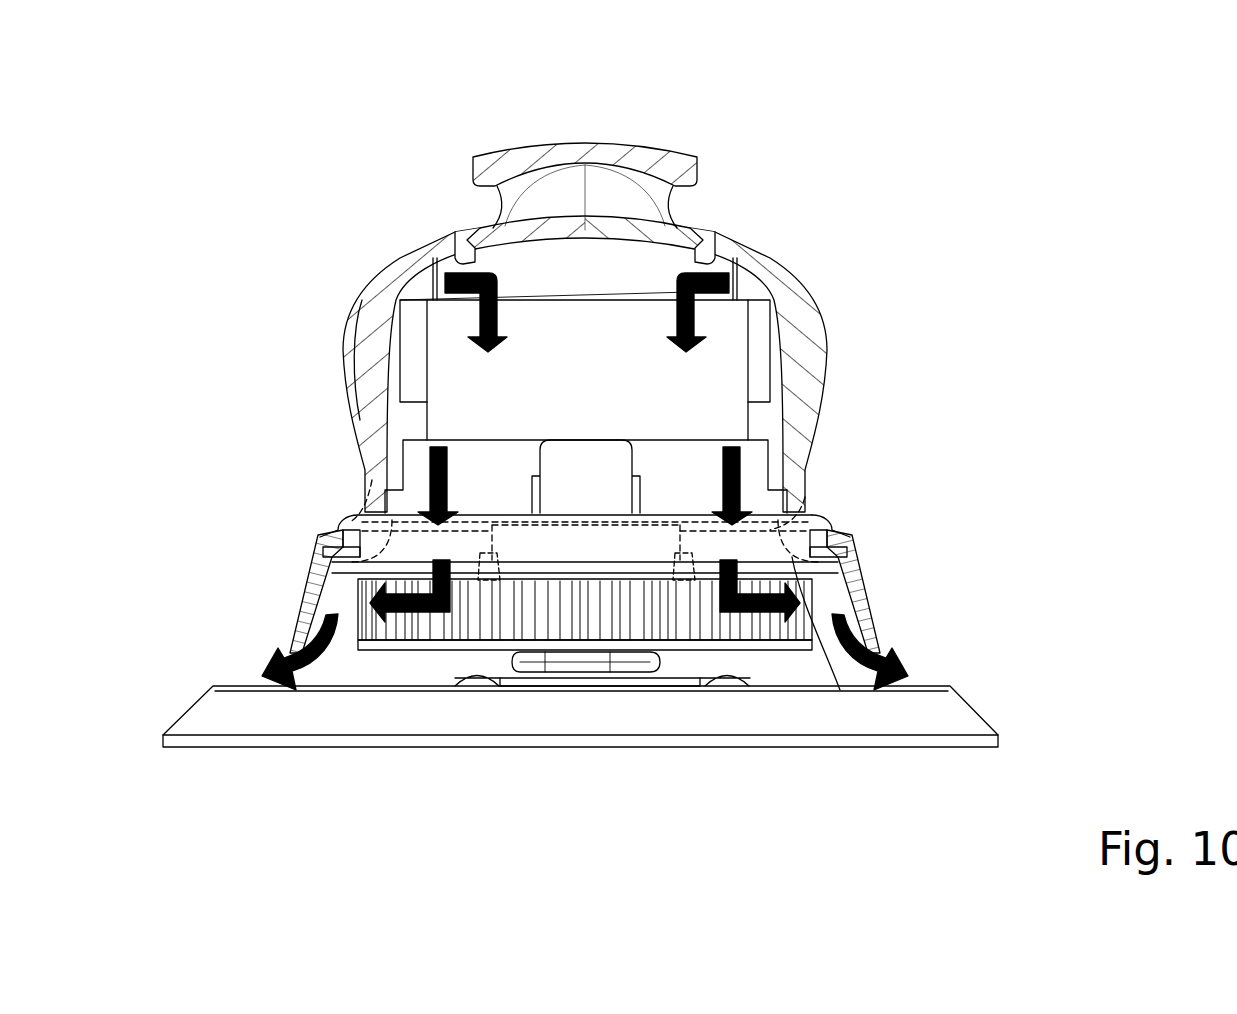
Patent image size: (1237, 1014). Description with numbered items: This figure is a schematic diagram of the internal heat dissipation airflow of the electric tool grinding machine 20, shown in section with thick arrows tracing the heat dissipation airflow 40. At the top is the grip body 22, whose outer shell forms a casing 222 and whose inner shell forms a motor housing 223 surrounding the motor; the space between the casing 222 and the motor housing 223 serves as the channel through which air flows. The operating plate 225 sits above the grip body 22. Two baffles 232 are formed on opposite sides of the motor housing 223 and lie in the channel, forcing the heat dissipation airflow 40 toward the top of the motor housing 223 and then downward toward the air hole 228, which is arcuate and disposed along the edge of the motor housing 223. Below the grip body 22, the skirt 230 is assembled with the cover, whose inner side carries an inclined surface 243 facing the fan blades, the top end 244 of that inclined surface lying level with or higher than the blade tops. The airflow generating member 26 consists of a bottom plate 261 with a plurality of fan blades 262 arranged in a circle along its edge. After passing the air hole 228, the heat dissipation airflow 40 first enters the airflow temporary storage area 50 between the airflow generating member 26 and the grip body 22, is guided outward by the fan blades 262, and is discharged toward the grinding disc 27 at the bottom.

The electric tool grinding machine 20 is at (1060, 84).
The grip body 22 is at (755, 224).
The casing 222 is at (357, 302).
The motor housing 223 is at (455, 232).
The operating plate 225 is at (657, 147).
The air hole 228 is at (372, 480).
The skirt 230 is at (343, 518).
The baffles 232 is at (412, 345).
The heat dissipation airflow 40 is at (700, 305).
The airflow temporary storage area 50 is at (782, 555).
The inclined surface 243 is at (285, 624).
The top end of the inclined surface 244 is at (840, 690).
The airflow generating member 26 is at (432, 652).
The bottom plate 261 is at (560, 645).
The fan blades 262 is at (748, 628).
The grinding disc 27 is at (668, 750).